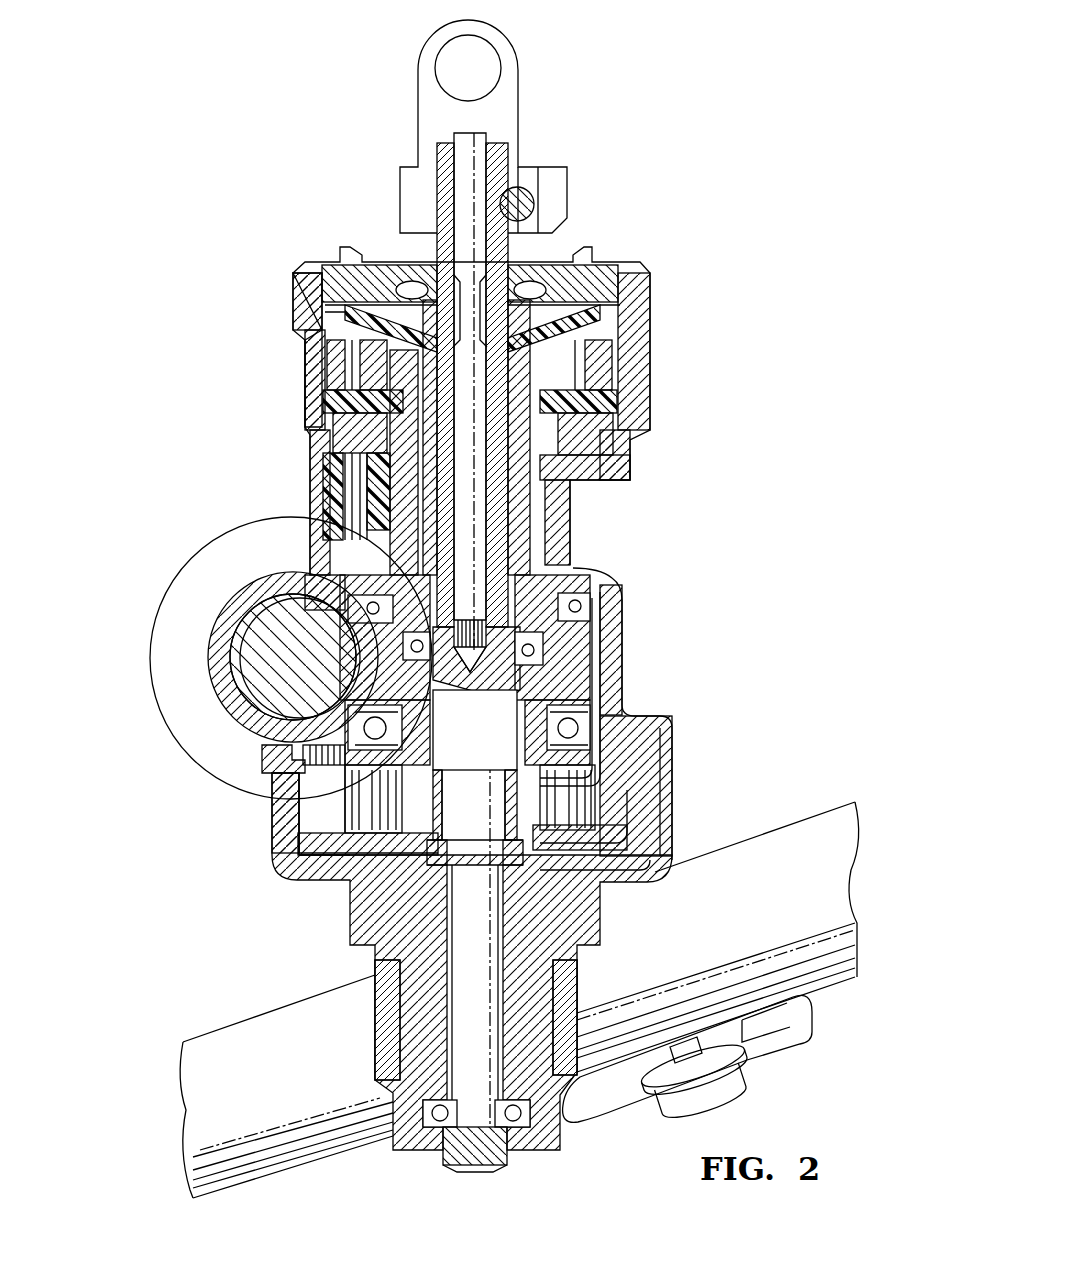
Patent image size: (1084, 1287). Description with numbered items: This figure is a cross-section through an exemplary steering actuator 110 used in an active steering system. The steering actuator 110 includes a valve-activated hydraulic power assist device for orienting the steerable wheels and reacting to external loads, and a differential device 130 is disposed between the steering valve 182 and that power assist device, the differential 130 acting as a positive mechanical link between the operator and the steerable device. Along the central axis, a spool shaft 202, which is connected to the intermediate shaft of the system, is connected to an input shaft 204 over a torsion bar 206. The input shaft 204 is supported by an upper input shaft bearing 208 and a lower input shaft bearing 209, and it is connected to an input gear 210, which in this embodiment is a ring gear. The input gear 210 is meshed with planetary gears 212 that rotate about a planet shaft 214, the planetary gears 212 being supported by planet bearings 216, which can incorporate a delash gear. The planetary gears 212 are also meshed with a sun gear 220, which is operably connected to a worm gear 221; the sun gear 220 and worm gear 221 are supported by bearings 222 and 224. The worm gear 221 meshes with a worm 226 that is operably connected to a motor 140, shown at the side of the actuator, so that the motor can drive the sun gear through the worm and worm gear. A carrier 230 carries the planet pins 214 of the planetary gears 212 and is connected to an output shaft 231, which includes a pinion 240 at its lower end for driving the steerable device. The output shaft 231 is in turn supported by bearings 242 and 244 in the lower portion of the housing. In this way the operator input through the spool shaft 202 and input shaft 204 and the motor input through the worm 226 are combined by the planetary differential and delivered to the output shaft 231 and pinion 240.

The differential device 130 is at (655, 139).
The torsion bar 206 is at (460, 150).
The spool shaft 202 is at (448, 215).
The upper input shaft bearing 208 is at (505, 590).
The steering valve 182 is at (640, 392).
The steering actuator 110 is at (664, 526).
The worm gear 221 is at (585, 680).
The planet shaft 214 is at (610, 745).
The planetary gears 212 is at (597, 803).
The input shaft 204 is at (565, 677).
The carrier 230 is at (630, 752).
The output shaft 231 is at (623, 770).
The input gear 210 is at (623, 813).
The sun gear 220 is at (630, 835).
The planet bearings 216 is at (337, 857).
The lower input shaft bearing 209 is at (440, 885).
The bearing 242 is at (388, 930).
The bearing 244 is at (557, 1087).
The bearing 222 is at (335, 580).
The bearing 224 is at (300, 665).
The worm 226 is at (240, 610).
The motor 140 is at (230, 545).
The pinion 240 is at (585, 1082).